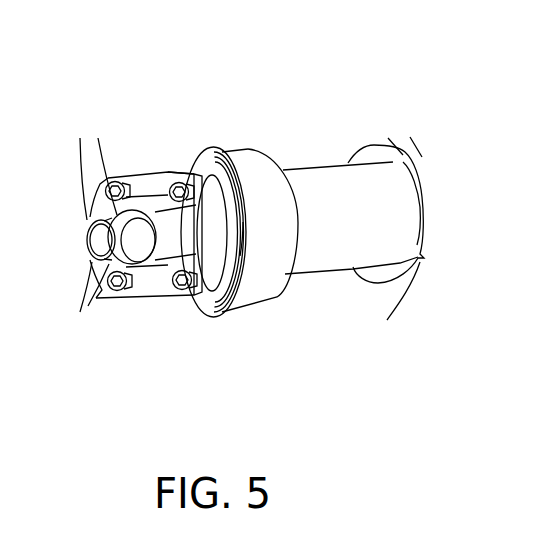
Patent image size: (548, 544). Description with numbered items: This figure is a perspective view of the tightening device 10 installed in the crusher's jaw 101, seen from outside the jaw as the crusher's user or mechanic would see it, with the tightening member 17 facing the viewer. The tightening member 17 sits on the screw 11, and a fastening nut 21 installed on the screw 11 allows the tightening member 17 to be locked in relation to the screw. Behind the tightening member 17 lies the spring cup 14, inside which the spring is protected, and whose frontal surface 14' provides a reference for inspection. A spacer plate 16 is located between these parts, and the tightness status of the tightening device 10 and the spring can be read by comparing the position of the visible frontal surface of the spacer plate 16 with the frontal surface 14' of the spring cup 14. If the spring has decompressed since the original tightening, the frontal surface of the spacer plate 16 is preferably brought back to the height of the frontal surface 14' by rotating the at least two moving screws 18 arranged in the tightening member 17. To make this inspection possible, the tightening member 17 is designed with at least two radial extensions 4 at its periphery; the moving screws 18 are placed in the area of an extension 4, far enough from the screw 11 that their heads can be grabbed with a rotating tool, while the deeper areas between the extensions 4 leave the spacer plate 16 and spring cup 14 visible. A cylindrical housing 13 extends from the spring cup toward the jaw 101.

The tightening device 10 is at (163, 57).
The screw 11 is at (98, 240).
The cylindrical housing 13 is at (307, 182).
The spring cup 14 is at (239, 195).
The frontal surface of the spring cup 14' is at (276, 296).
The spacer plate 16 is at (178, 163).
The tightening member 17 is at (145, 189).
The moving screws 18 is at (122, 291).
The fastening nut 21 is at (144, 260).
The radial extensions 4 is at (199, 288).
The crusher's jaw 101 is at (373, 155).